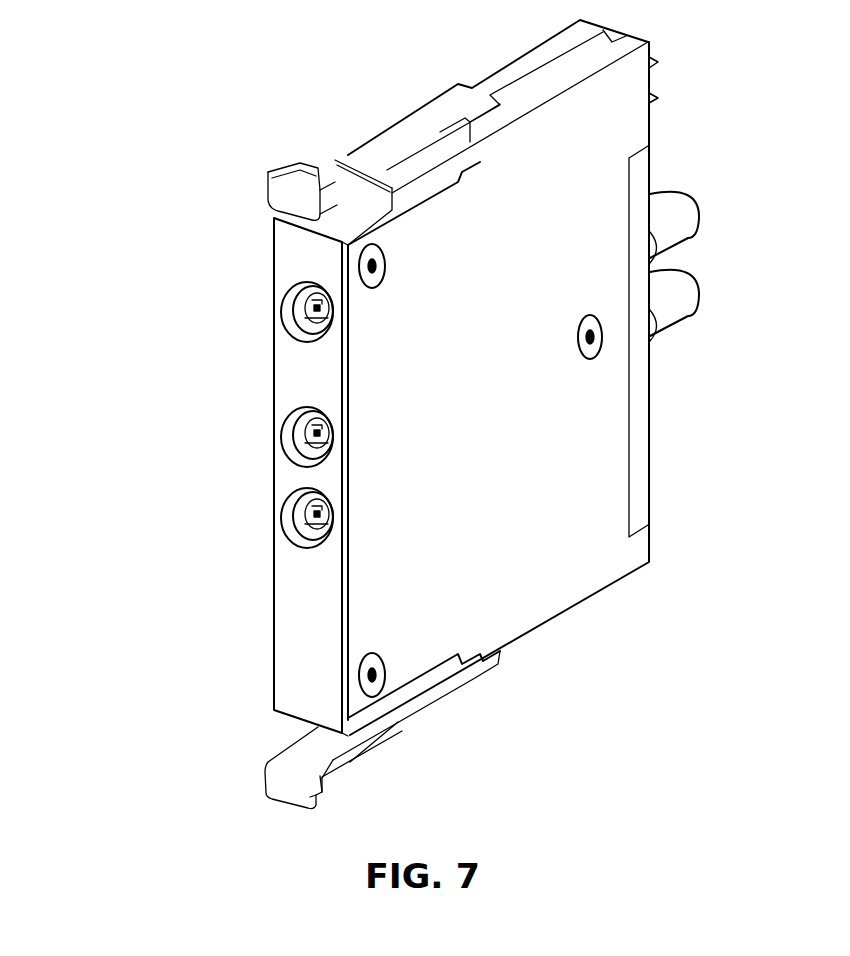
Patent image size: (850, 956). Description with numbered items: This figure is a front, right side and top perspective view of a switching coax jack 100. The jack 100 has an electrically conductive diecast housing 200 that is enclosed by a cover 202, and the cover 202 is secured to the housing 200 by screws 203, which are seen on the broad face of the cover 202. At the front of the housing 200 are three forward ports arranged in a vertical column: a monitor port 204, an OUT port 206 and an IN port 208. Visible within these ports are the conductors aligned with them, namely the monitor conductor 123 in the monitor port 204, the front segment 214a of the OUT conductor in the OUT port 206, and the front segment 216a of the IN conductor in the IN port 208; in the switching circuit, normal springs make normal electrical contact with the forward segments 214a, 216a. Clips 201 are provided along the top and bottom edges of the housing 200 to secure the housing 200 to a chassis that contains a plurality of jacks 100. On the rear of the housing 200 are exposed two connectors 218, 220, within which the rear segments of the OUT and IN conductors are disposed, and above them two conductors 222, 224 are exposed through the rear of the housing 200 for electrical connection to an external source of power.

The switching coax jack 100 is at (168, 143).
The housing 200 is at (268, 690).
The clips 201 is at (377, 128).
The cover 202 is at (578, 568).
The screws 203 is at (589, 332).
The monitor port 204 is at (290, 327).
The OUT port 206 is at (292, 448).
The IN port 208 is at (297, 542).
The monitor conductor 123 is at (323, 304).
The front segment of OUT conductor 214a is at (323, 432).
The front segment of IN conductor 216a is at (317, 509).
The connector 218 is at (682, 195).
The connector 220 is at (697, 297).
The conductor 222 is at (655, 62).
The conductor 224 is at (655, 97).